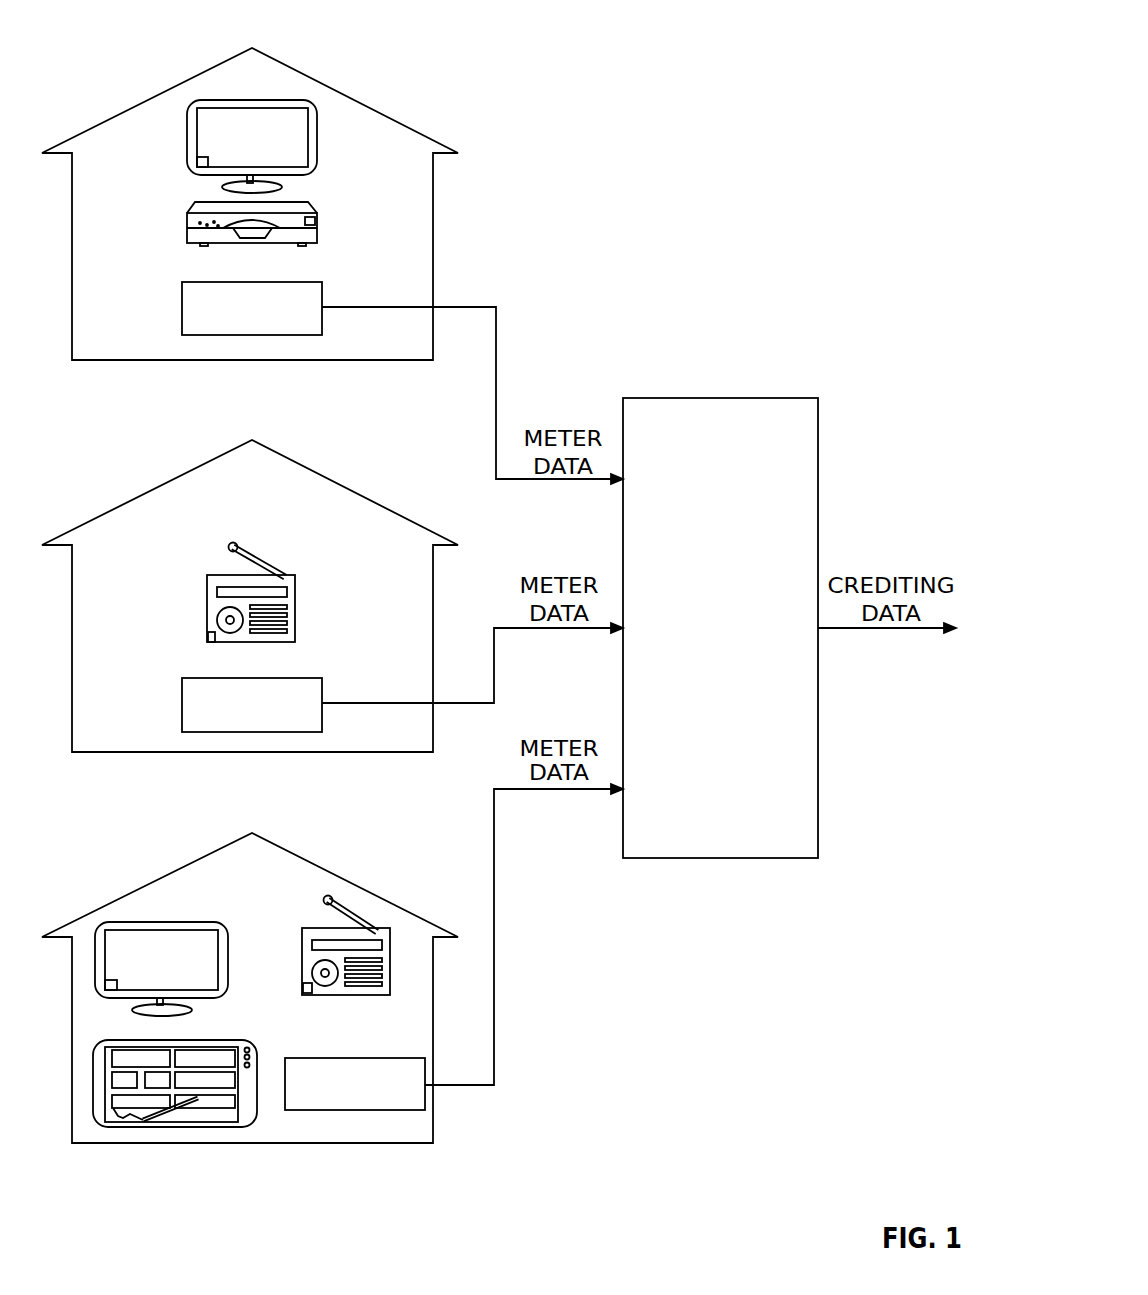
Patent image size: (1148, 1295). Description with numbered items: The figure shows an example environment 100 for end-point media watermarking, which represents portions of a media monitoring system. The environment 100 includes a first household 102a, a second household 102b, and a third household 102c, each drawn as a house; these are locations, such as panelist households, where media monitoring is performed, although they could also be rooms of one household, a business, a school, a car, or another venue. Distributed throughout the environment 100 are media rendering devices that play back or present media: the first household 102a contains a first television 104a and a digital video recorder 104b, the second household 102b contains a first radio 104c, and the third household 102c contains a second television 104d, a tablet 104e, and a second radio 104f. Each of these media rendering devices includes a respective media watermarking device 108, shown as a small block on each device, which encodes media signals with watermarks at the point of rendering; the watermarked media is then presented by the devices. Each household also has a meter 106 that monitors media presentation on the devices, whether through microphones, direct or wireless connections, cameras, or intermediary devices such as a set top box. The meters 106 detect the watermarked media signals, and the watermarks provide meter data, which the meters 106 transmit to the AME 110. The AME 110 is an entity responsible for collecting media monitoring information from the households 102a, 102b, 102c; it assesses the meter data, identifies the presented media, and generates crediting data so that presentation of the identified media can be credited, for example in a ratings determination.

The environment 100 is at (762, 31).
The first household 102a is at (357, 98).
The second household 102b is at (355, 492).
The third household 102c is at (357, 882).
The first television 104a is at (313, 162).
The digital video recorder 104b is at (187, 227).
The first radio 104c is at (297, 577).
The second television 104d is at (157, 922).
The tablet 104e is at (190, 1040).
The second radio 104f is at (332, 998).
The meter 106 is at (287, 282).
The media watermarking device 108 is at (197, 170).
The AME 110 is at (758, 398).